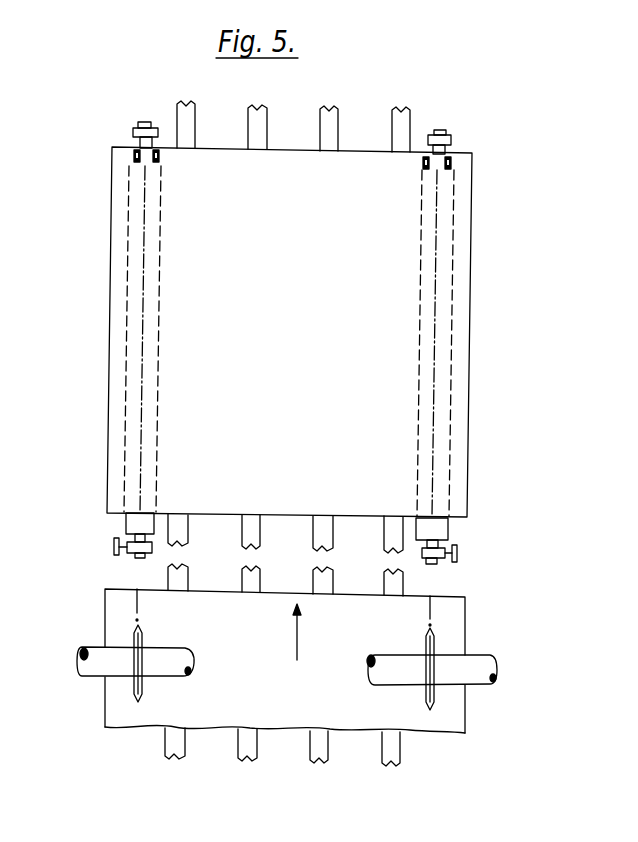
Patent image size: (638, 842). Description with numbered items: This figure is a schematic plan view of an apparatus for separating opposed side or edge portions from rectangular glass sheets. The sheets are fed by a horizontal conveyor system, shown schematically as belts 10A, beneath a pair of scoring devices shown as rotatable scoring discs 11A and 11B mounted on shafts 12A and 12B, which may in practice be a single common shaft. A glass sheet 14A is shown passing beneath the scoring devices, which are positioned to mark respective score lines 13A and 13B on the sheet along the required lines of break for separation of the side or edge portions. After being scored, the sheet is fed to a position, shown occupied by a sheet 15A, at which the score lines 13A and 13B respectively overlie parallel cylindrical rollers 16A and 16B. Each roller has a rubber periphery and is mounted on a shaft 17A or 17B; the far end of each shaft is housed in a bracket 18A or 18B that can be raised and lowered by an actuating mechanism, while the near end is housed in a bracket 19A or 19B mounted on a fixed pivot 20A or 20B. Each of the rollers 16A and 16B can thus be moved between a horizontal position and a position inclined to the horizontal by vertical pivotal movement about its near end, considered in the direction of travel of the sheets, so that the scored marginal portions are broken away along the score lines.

The belts 10A is at (282, 767).
The rotatable scoring disc 11A is at (426, 689).
The rotatable scoring disc 11B is at (143, 687).
The shaft 12A is at (392, 654).
The shaft 12B is at (172, 647).
The score line 13A is at (435, 410).
The score line 13B is at (147, 408).
The glass sheet 14A is at (465, 713).
The sheet 15A is at (474, 258).
The cylindrical roller 16A is at (456, 398).
The cylindrical roller 16B is at (127, 420).
The shaft 17A is at (438, 130).
The shaft 17B is at (143, 123).
The bracket 18A is at (451, 138).
The bracket 18B is at (132, 132).
The bracket 19A is at (422, 553).
The bracket 19B is at (153, 549).
The fixed pivot 20A is at (454, 566).
The fixed pivot 20B is at (120, 557).